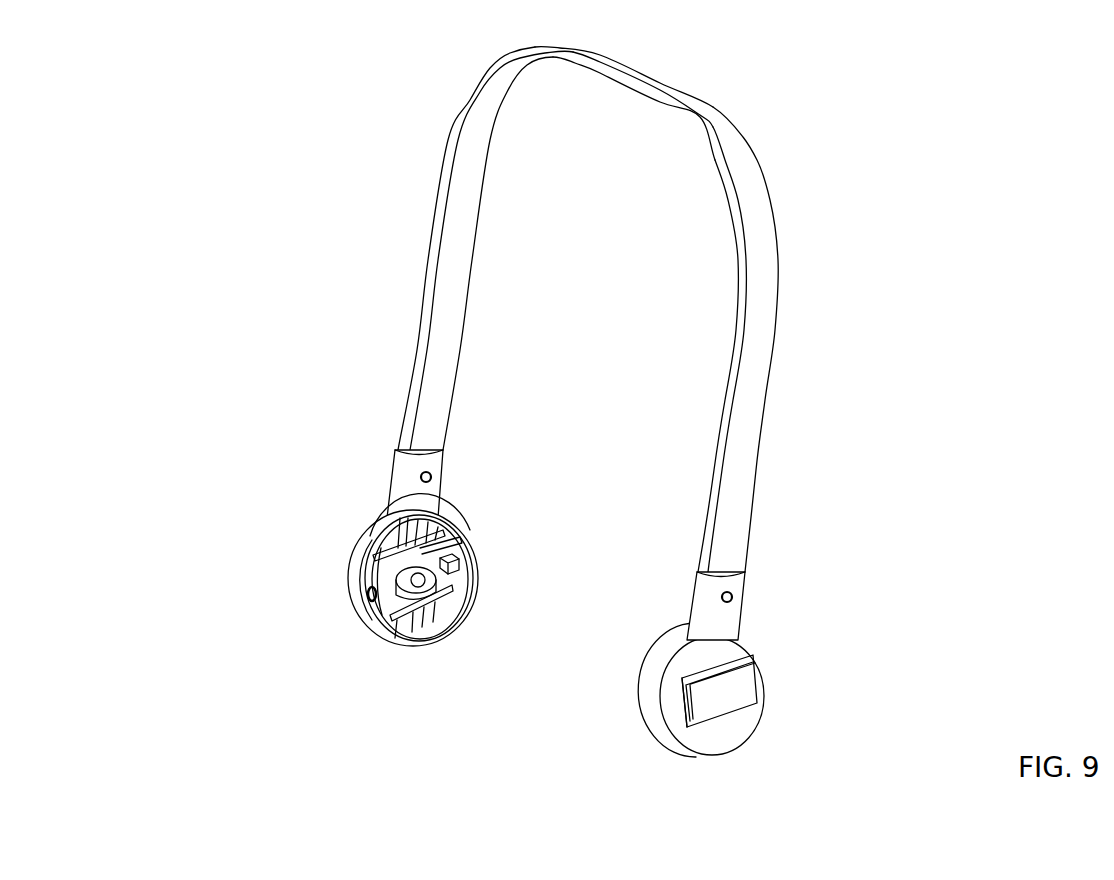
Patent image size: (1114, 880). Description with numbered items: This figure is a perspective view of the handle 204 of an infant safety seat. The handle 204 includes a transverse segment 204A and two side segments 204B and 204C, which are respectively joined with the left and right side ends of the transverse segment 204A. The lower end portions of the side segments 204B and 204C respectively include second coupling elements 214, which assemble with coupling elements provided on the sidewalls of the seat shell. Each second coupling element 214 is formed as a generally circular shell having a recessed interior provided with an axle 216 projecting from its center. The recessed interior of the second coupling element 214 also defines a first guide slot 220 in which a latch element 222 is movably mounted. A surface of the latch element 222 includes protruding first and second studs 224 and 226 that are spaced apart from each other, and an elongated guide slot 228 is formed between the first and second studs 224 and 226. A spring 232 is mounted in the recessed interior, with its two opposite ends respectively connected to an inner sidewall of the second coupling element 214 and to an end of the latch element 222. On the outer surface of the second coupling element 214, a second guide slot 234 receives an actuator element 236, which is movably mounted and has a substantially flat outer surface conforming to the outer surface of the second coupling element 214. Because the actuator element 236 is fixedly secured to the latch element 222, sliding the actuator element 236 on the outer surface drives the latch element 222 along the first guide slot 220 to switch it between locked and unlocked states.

The handle 204 is at (152, 68).
The transverse segment 204A is at (655, 87).
The side segment 204B is at (448, 153).
The side segment 204C is at (767, 237).
The second coupling element 214 is at (368, 542).
The axle 216 is at (389, 636).
The first guide slot 220 is at (466, 518).
The latch element 222 is at (445, 548).
The first stud 224 is at (459, 563).
The second stud 226 is at (392, 600).
The elongated guide slot 228 is at (456, 580).
The spring 232 is at (366, 596).
The second guide slot 234 is at (677, 718).
The actuator element 236 is at (753, 683).